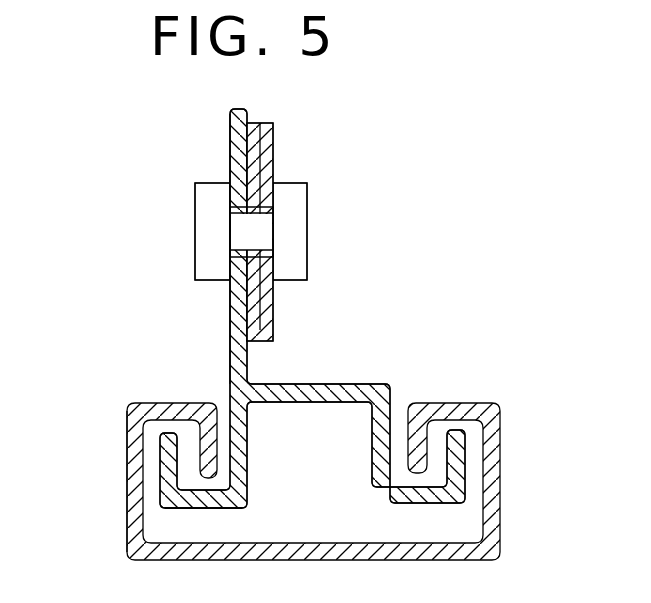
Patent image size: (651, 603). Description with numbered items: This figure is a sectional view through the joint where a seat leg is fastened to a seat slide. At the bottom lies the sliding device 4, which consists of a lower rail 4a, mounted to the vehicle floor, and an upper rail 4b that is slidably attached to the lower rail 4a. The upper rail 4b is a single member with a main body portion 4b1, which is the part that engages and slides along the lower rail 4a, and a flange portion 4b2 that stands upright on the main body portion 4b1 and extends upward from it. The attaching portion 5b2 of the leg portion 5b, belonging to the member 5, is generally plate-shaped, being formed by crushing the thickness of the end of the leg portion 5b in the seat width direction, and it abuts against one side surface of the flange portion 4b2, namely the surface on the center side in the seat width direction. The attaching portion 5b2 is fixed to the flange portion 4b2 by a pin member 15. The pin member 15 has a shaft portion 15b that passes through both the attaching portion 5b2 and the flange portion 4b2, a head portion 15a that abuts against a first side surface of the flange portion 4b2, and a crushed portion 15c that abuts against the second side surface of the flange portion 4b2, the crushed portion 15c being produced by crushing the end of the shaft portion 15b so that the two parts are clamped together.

The sliding device 4 is at (118, 408).
The lower rail 4a is at (128, 480).
The upper rail 4b is at (265, 442).
The main body portion 4b1 is at (255, 477).
The flange portion 4b2 is at (230, 312).
The frame member 5 is at (364, 206).
The leg portion 5b is at (364, 232).
The attaching portion 5b2 is at (273, 145).
The pin member 15 is at (194, 182).
The head portion 15a is at (208, 235).
The shaft portion 15b is at (263, 237).
The crushed portion 15c is at (298, 230).